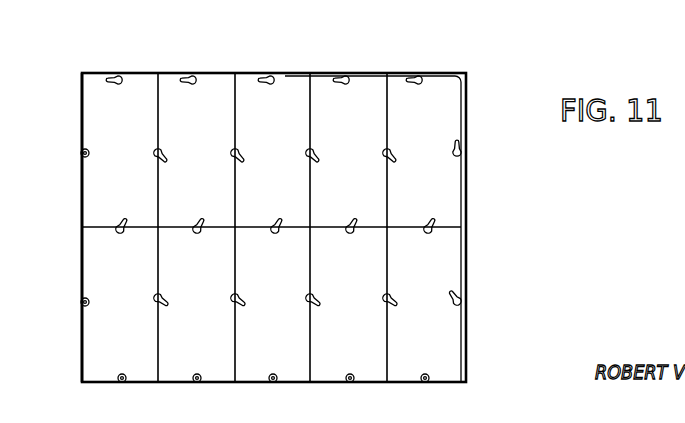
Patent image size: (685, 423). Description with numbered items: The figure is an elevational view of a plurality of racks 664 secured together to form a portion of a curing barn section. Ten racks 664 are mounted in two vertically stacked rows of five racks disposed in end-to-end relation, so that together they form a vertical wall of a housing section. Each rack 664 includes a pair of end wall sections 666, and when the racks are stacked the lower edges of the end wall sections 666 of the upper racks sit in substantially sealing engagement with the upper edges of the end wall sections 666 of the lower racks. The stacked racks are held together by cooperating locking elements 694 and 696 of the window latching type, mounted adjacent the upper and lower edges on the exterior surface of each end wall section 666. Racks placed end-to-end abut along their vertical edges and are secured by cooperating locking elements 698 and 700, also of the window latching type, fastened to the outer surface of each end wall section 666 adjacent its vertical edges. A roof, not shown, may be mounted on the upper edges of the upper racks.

The rack 664 is at (417, 66).
The end wall section 666 is at (417, 133).
The locking element 694 is at (190, 84).
The locking element 696 is at (425, 385).
The locking element 698 is at (468, 283).
The locking element 700 is at (82, 152).